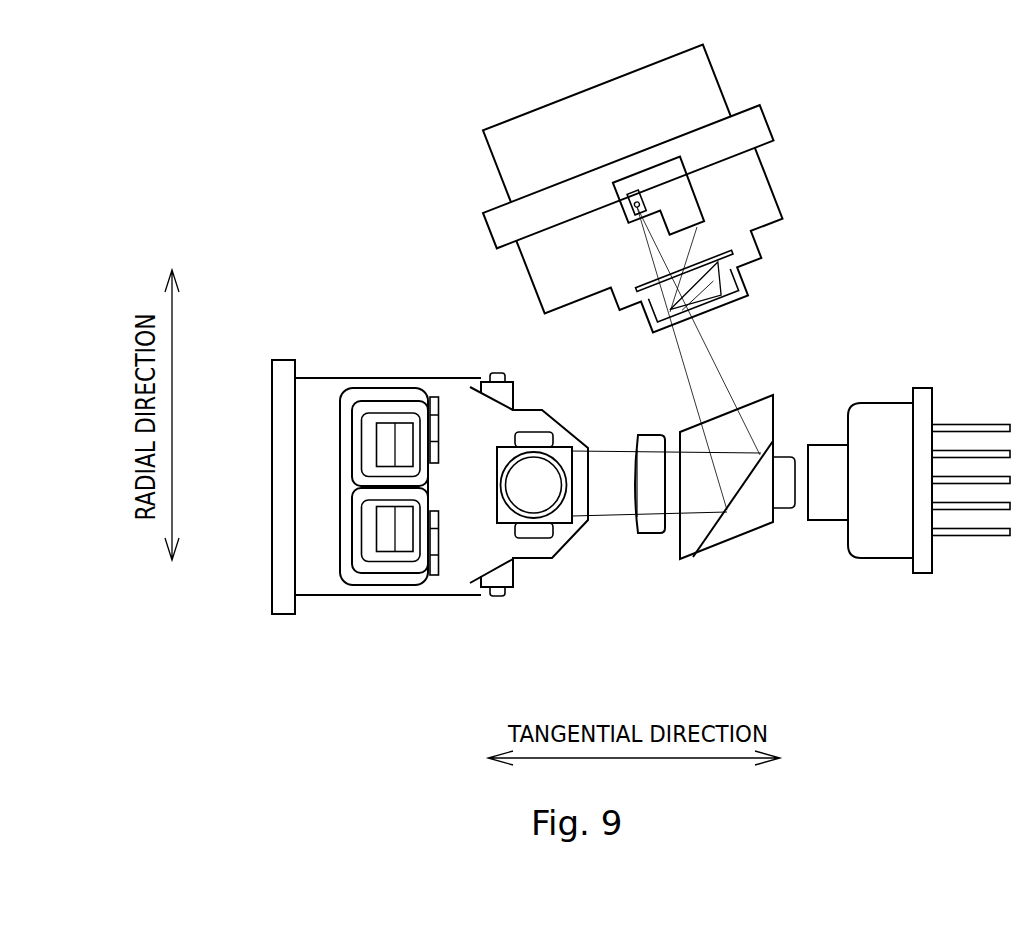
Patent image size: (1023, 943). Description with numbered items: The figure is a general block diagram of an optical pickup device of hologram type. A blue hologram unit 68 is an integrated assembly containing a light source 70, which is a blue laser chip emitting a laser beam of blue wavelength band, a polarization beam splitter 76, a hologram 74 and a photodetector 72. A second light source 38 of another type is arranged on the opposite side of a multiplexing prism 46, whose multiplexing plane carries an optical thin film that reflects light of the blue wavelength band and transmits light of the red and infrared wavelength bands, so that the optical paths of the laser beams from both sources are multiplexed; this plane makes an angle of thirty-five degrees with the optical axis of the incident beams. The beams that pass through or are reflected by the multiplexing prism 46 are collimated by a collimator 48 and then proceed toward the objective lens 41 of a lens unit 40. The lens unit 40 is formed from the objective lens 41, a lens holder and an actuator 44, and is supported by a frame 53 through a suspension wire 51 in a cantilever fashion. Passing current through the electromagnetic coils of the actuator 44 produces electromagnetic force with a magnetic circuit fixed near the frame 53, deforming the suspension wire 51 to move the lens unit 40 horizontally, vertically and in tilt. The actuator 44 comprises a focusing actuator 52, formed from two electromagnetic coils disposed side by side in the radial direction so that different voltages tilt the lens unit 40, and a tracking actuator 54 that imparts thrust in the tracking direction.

The light source 38 is at (882, 550).
The lens unit 40 is at (539, 594).
The objective lens 41 is at (547, 478).
The actuator 44 is at (369, 623).
The multiplexing prism 46 is at (733, 540).
The collimator 48 is at (655, 537).
The suspension wire 51 is at (393, 377).
The focusing actuator 52 is at (343, 417).
The frame 53 is at (282, 560).
The tracking actuator 54 is at (436, 435).
The blue hologram unit 68 is at (782, 297).
The light source 70 is at (645, 203).
The photodetector 72 is at (688, 208).
The hologram 74 is at (747, 261).
The polarization beam splitter 76 is at (720, 294).